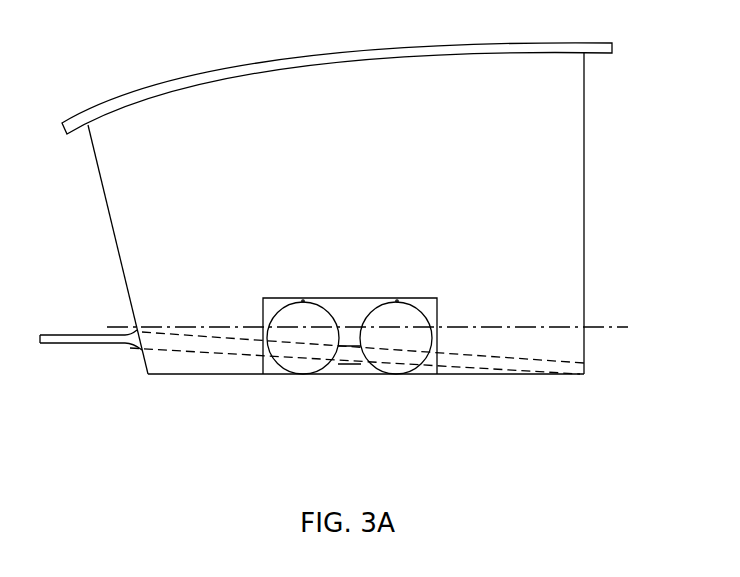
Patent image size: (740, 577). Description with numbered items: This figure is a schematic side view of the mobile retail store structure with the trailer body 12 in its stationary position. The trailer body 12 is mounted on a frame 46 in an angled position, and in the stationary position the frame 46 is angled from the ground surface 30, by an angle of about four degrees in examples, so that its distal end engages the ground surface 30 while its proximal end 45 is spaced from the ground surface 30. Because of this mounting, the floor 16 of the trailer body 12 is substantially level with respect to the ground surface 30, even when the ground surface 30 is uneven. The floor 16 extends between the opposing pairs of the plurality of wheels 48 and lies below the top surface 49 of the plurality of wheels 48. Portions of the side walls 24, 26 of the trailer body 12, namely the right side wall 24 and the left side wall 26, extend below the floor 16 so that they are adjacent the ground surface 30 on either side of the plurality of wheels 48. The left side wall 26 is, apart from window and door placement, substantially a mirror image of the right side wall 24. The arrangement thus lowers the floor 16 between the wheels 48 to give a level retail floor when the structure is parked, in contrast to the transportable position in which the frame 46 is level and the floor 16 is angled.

The trailer body 12 is at (116, 62).
The right side wall 24 is at (123, 199).
The left side wall 26 is at (565, 170).
The proximal end 45 is at (136, 341).
The floor 16 is at (620, 327).
The ground surface 30 is at (358, 472).
The plurality of wheels 48 is at (290, 357).
The frame 46 is at (350, 355).
The top surface 49 is at (397, 300).